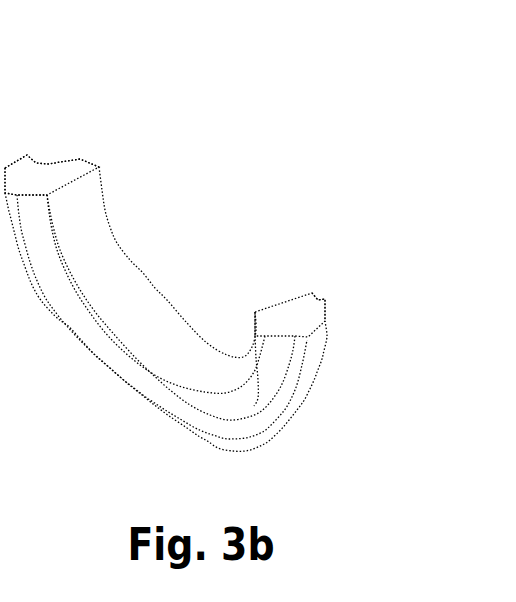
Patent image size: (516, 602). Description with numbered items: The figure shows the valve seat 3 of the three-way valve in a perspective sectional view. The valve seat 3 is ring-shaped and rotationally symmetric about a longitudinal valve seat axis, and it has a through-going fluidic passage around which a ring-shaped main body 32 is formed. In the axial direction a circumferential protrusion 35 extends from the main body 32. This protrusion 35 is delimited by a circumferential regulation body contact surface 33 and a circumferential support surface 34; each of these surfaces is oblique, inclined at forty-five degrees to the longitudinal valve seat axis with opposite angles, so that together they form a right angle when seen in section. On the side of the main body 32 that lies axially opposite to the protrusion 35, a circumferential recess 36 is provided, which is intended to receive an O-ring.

The valve seat 3 is at (212, 256).
The ring-shaped main body 32 is at (290, 302).
The regulation body contact surface 33 is at (45, 258).
The support surface 34 is at (257, 397).
The circumferential protrusion 35 is at (27, 188).
The circumferential recess 36 is at (320, 318).